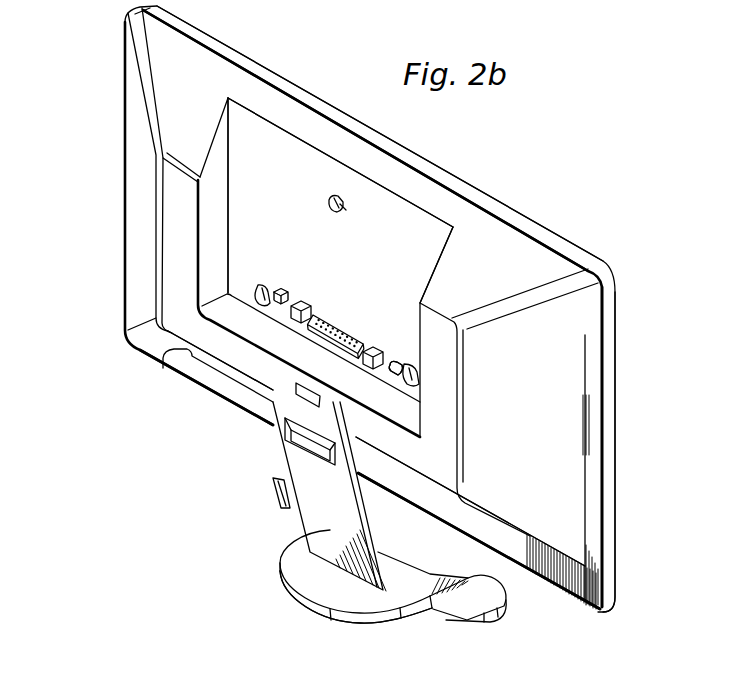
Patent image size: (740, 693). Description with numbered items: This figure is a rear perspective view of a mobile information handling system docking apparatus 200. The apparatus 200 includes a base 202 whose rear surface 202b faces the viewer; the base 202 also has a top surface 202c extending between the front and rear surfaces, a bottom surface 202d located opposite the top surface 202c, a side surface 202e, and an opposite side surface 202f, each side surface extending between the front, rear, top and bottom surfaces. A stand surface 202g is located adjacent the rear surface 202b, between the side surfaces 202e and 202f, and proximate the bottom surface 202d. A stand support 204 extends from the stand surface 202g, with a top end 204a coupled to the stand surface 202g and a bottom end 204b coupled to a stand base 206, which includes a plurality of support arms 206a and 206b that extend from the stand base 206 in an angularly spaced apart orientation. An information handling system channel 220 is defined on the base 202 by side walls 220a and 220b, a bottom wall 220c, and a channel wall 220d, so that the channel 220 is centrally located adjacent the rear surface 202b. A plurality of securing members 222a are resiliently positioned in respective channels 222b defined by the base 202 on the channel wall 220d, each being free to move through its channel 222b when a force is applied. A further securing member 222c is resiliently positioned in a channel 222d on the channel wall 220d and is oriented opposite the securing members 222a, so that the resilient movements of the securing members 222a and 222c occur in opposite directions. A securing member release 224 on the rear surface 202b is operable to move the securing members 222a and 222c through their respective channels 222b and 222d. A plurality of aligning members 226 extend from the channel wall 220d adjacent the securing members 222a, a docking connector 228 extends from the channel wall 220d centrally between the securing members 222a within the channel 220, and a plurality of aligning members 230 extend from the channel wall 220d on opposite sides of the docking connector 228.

The mobile information handling system docking apparatus 200 is at (556, 123).
The base 202 is at (536, 217).
The rear surface 202b is at (138, 152).
The top surface 202c is at (461, 188).
The bottom surface 202d is at (256, 426).
The side surface 202e is at (612, 433).
The side surface 202f is at (123, 213).
The stand surface 202g is at (185, 351).
The stand support 204 is at (368, 511).
The top end 204a is at (318, 450).
The bottom end 204b is at (327, 580).
The stand base 206 is at (282, 581).
The support arm 206a is at (273, 481).
The support arm 206b is at (477, 603).
The information handling system channel 220 is at (365, 204).
The side wall 220a is at (214, 160).
The side wall 220b is at (434, 257).
The bottom wall 220c is at (410, 423).
The channel wall 220d is at (273, 140).
The securing member 222a is at (259, 286).
The channel 222b is at (272, 290).
The securing member 222c is at (326, 197).
The channel 222d is at (345, 208).
The securing member release 224 is at (296, 385).
The aligning member 226 is at (283, 296).
The docking connector 228 is at (327, 319).
The aligning member 230 is at (306, 304).